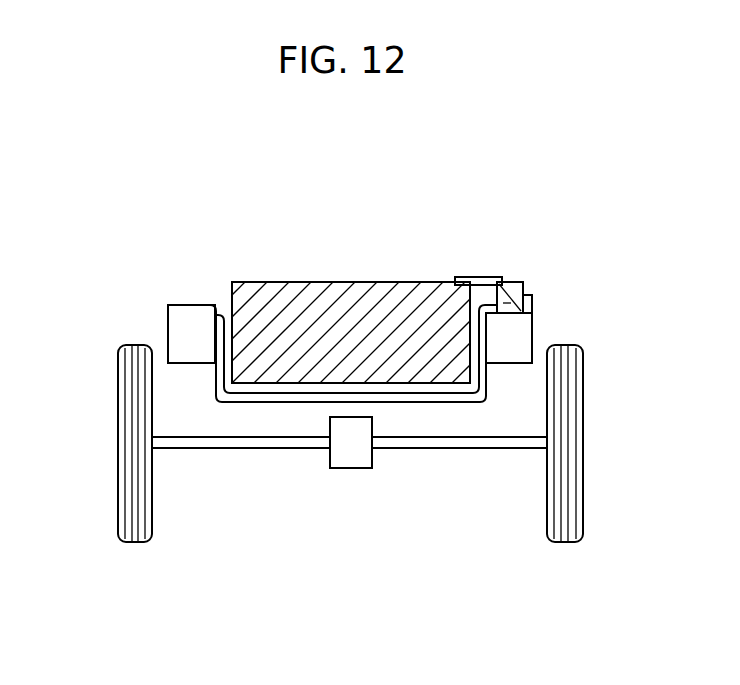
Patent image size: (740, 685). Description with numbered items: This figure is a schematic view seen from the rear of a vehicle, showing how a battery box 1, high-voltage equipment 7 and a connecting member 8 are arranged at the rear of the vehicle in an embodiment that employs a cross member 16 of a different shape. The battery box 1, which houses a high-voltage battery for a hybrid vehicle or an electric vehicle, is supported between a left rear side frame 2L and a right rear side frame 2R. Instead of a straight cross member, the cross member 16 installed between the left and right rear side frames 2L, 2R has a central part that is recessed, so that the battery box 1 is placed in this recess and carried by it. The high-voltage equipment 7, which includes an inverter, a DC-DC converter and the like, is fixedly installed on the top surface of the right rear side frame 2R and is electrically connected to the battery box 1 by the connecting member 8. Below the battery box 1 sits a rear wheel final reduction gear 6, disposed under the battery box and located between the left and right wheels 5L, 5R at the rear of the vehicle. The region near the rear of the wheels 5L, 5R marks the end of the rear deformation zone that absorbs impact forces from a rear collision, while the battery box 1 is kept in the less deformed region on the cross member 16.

The battery box 1 is at (327, 228).
The cross member 16 is at (188, 305).
The left rear side frame 2L is at (172, 330).
The right rear side frame 2R is at (525, 330).
The high-voltage equipment 7 is at (507, 285).
The connecting member 8 is at (478, 278).
The left wheel 5L is at (118, 416).
The right wheel 5R is at (583, 420).
The rear wheel final reduction gear 6 is at (350, 468).